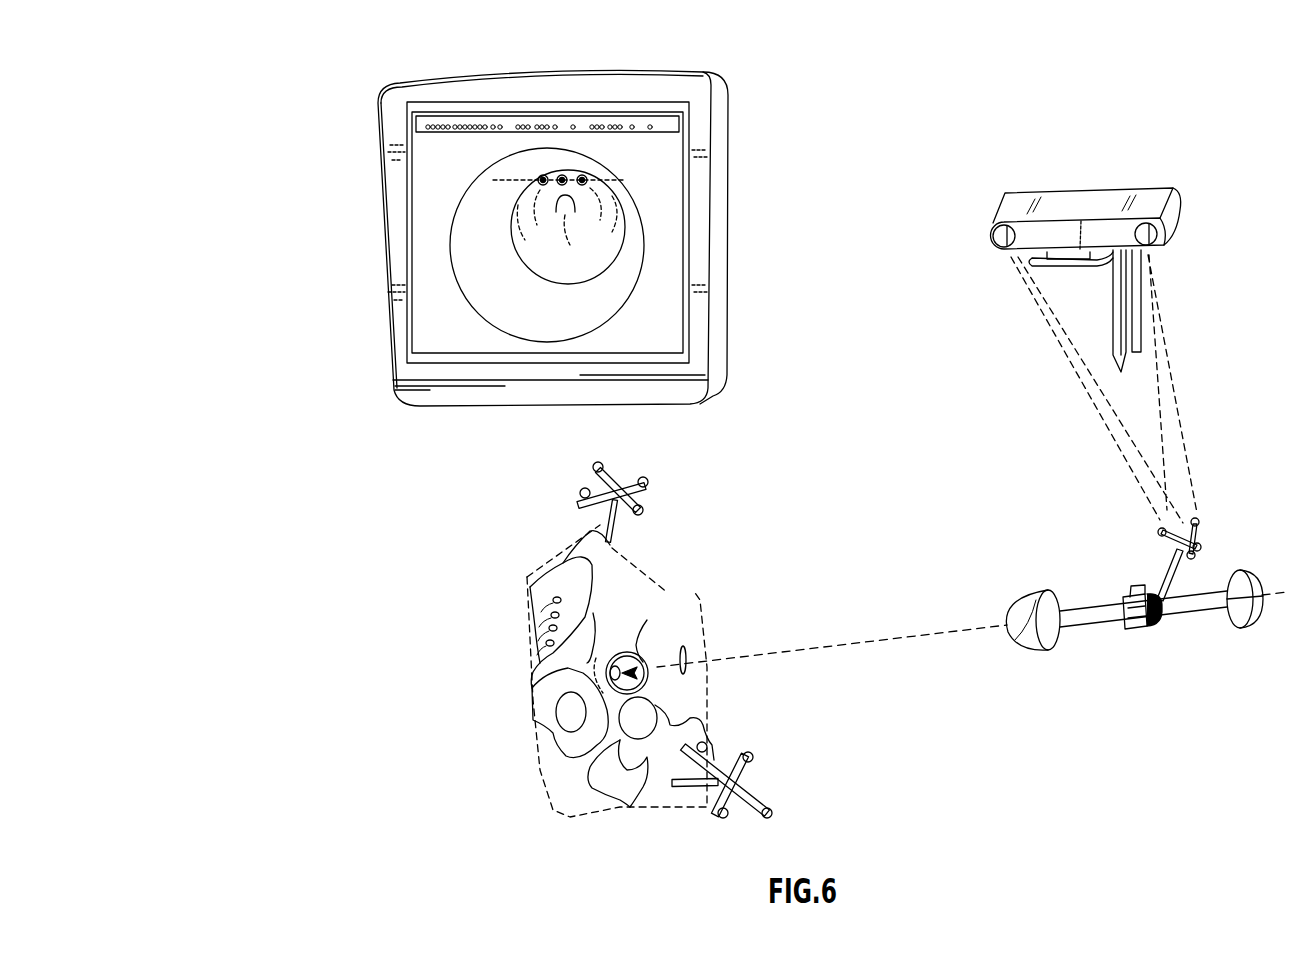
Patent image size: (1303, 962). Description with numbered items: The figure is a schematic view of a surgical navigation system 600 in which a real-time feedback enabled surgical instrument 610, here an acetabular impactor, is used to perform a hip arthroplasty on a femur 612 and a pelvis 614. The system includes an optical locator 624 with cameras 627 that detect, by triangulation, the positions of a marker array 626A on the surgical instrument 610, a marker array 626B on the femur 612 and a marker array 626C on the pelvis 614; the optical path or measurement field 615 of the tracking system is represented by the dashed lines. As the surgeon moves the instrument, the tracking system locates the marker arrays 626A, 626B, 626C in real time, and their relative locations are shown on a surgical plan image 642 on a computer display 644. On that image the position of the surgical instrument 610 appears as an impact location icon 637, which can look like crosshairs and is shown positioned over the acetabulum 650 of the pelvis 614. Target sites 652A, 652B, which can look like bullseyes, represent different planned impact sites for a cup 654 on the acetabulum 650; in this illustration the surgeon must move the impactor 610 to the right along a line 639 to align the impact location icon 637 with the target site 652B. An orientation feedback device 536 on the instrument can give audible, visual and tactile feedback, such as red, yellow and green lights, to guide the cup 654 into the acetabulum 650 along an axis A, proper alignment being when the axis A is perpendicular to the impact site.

The surgical navigation system 600 is at (208, 54).
The surgical instrument 610 is at (1210, 586).
The femur 612 is at (603, 805).
The pelvis 614 is at (647, 620).
The field of view / line of sight of camera 615 is at (1172, 352).
The optical locator 624 is at (983, 207).
The marker array 626A is at (1180, 577).
The marker array 626B is at (690, 790).
The marker array 626C is at (653, 523).
The cameras 627 is at (994, 237).
The orientation feedback device 536 is at (1138, 584).
The impact location icon 637 is at (564, 174).
The line 639 is at (493, 178).
The surgical plan image 642 is at (658, 323).
The computer display 644 is at (740, 244).
The acetabulum 650 is at (606, 668).
The target site 652A is at (541, 176).
The target site 652B is at (568, 227).
The cup 654 is at (1023, 640).
The axis A is at (828, 647).